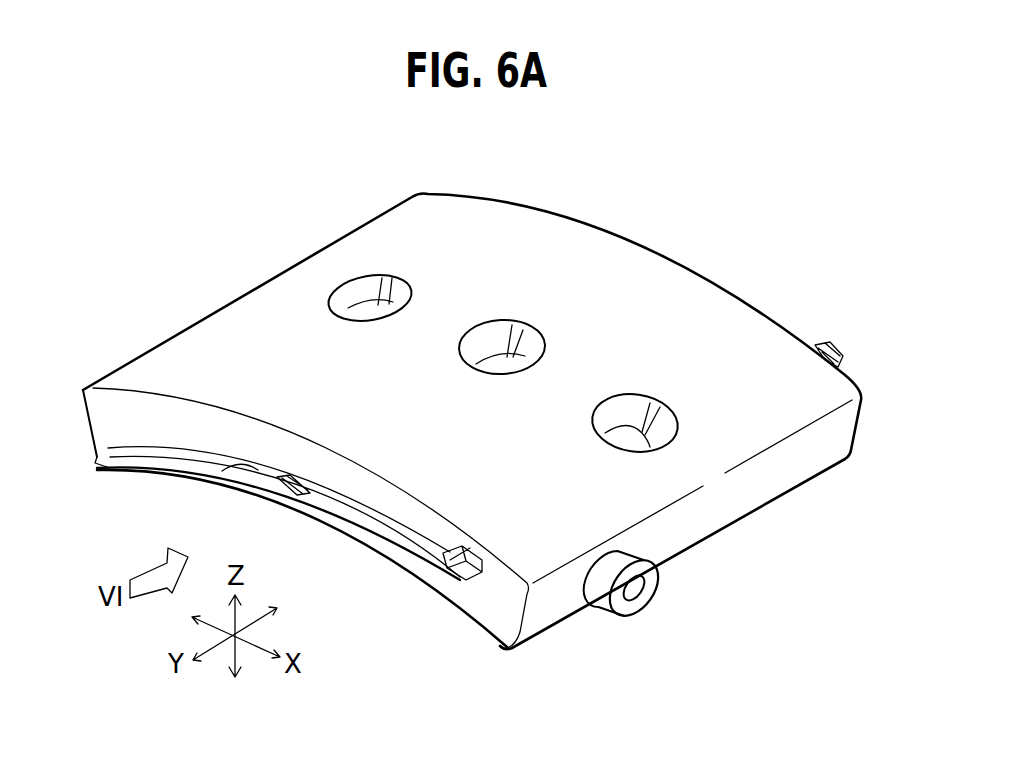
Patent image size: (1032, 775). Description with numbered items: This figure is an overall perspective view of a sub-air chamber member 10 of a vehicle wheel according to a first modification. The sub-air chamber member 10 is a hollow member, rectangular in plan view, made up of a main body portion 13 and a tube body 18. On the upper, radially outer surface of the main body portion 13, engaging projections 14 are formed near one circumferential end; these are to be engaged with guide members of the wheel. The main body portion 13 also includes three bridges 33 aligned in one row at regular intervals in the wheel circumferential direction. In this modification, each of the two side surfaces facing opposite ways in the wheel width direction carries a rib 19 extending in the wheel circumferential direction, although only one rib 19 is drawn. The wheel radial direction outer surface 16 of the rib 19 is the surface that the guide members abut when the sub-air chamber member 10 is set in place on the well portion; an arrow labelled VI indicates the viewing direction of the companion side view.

The sub-air chamber member 10 is at (634, 206).
The main body portion 13 is at (708, 337).
The engaging projections 14 is at (458, 552).
The wheel radial direction outer surface 16 is at (213, 473).
The tube body 18 is at (607, 592).
The rib 19 is at (400, 543).
The bridges 33 is at (626, 412).